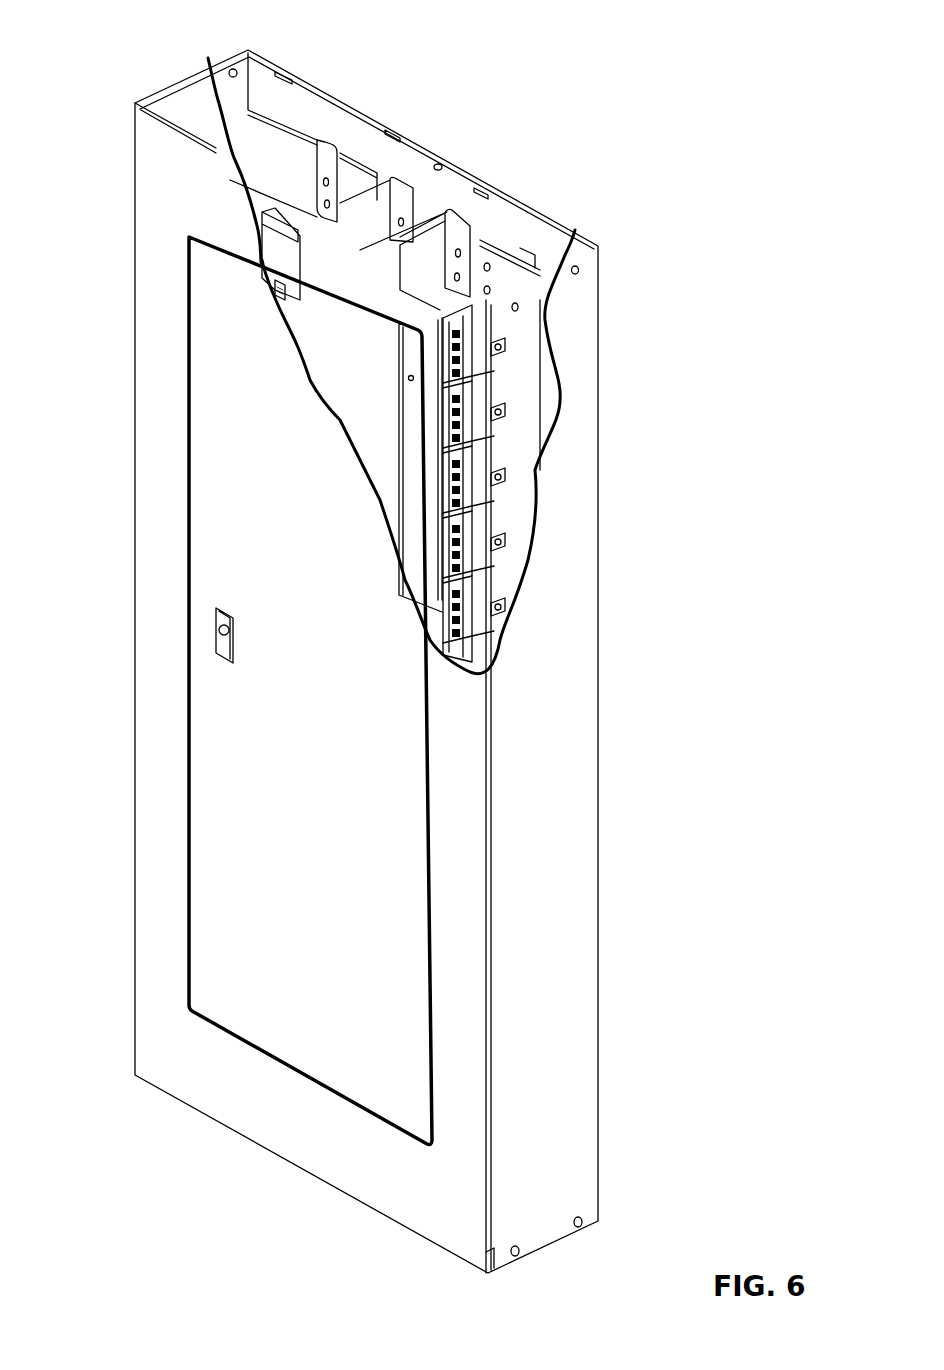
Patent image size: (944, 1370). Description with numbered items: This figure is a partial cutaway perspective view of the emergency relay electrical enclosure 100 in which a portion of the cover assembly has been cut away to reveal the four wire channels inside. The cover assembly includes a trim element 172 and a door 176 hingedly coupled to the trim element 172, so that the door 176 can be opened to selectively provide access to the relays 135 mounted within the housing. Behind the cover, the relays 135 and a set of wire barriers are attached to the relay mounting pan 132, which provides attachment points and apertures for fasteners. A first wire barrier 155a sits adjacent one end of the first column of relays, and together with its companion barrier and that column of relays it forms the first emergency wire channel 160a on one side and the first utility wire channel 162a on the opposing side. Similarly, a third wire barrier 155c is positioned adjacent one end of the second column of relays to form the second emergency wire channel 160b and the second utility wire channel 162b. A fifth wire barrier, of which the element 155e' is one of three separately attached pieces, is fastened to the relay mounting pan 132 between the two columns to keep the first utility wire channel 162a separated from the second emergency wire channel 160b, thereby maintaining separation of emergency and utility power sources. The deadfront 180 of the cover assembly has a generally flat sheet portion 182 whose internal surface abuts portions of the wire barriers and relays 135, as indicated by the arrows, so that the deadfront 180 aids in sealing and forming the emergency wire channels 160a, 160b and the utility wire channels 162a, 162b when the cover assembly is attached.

The emergency relay electrical enclosure 100 is at (563, 87).
The relay mounting pan 132 is at (535, 357).
The relays 135 is at (483, 327).
The first wire barrier 155a is at (303, 207).
The third wire barrier 155c is at (462, 232).
The first element of fifth wire barrier 155e' is at (410, 127).
The first emergency wire channel 160a is at (240, 167).
The second emergency wire channel 160b is at (462, 230).
The first utility wire channel 162a is at (377, 234).
The second utility wire channel 162b is at (527, 290).
The trim element 172 is at (178, 1093).
The door 176 is at (213, 937).
The deadfront 180 is at (435, 417).
The generally flat sheet portion 182 is at (386, 394).